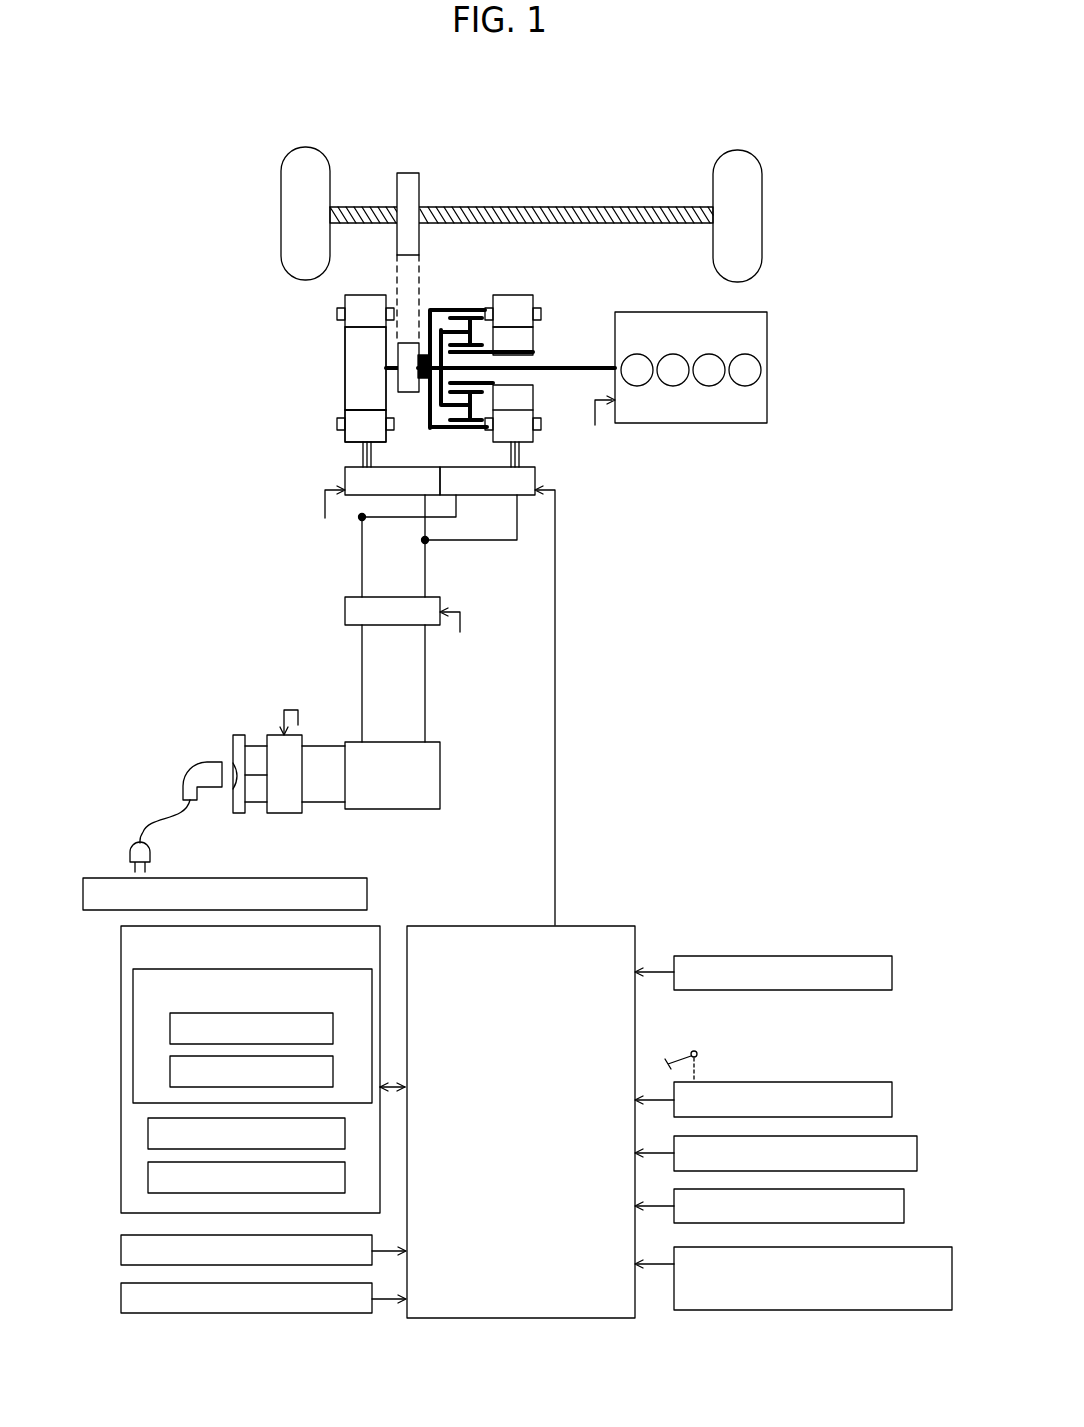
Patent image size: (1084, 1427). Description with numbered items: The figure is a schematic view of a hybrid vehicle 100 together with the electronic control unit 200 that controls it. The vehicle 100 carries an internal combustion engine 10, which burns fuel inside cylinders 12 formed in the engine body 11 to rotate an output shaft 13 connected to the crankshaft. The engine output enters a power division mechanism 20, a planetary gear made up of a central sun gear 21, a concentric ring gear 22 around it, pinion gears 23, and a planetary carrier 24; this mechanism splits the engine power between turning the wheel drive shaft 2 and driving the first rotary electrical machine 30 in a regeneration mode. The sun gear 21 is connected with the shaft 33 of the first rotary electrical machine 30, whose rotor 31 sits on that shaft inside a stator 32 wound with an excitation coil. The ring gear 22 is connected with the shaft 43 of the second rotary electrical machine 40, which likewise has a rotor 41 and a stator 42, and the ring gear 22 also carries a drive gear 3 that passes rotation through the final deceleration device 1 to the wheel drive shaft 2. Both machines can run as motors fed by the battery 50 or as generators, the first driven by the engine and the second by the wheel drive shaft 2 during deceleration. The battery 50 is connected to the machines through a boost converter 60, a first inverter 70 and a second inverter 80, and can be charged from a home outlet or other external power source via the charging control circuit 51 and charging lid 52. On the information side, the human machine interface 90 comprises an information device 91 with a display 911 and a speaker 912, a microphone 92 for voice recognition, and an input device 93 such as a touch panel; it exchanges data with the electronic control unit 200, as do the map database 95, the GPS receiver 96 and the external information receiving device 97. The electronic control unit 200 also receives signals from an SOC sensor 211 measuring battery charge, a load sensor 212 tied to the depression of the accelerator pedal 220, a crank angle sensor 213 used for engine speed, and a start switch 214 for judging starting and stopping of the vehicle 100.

The vehicle 100 is at (268, 128).
The final deceleration device 1 is at (408, 173).
The wheel drive shaft 2 is at (348, 205).
The drive gear 3 is at (406, 394).
The internal combustion engine 10 is at (719, 350).
The engine body 11 is at (758, 339).
The cylinders 12 is at (755, 371).
The output shaft 13 is at (604, 366).
The power division mechanism 20 is at (486, 324).
The sun gear 21 is at (498, 319).
The ring gear 22 is at (431, 310).
The pinion gears 23 is at (472, 340).
The planetary carrier 24 is at (446, 330).
The first rotary electrical machine 30 is at (551, 355).
The rotor 31 is at (527, 332).
The stator 32 is at (528, 318).
The shaft 33 is at (518, 351).
The second rotary electrical machine 40 is at (272, 333).
The rotor 41 is at (360, 380).
The stator 42 is at (357, 420).
The shaft 43 is at (391, 363).
The battery 50 is at (441, 788).
The charging control circuit 51 is at (290, 816).
The charging lid 52 is at (238, 816).
The boost converter 60 is at (345, 612).
The first inverter 70 is at (536, 477).
The second inverter 80 is at (343, 477).
The human machine interface 90 is at (121, 968).
The information device 91 is at (133, 1005).
The display 911 is at (170, 1035).
The speaker 912 is at (170, 1072).
The microphone 92 is at (148, 1133).
The input device 93 is at (148, 1180).
The map database 95 is at (121, 1250).
The GPS receiver 96 is at (121, 1295).
The external information receiving device 97 is at (916, 1247).
The electronic control unit 200 is at (600, 925).
The SOC sensor 211 is at (788, 956).
The load sensor 212 is at (805, 1082).
The crank angle sensor 213 is at (880, 1136).
The start switch 214 is at (897, 1189).
The accelerator pedal 220 is at (693, 1051).